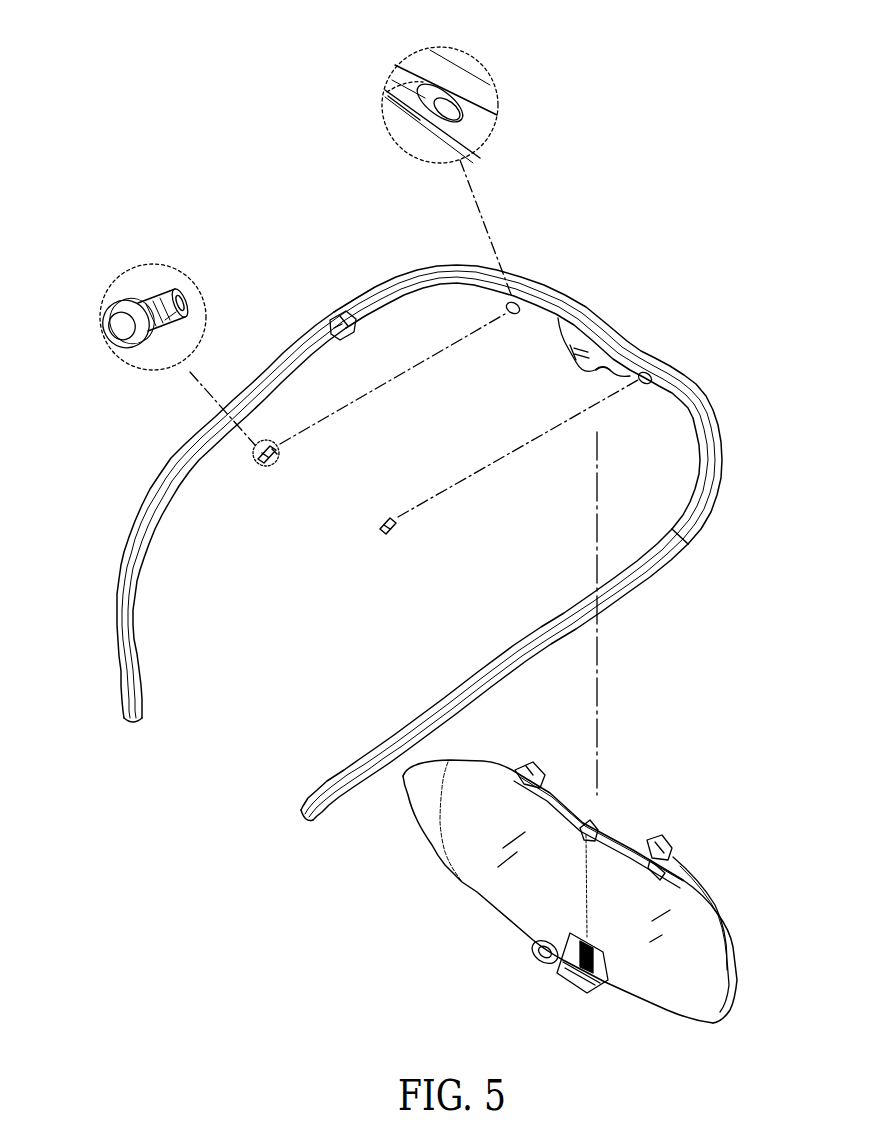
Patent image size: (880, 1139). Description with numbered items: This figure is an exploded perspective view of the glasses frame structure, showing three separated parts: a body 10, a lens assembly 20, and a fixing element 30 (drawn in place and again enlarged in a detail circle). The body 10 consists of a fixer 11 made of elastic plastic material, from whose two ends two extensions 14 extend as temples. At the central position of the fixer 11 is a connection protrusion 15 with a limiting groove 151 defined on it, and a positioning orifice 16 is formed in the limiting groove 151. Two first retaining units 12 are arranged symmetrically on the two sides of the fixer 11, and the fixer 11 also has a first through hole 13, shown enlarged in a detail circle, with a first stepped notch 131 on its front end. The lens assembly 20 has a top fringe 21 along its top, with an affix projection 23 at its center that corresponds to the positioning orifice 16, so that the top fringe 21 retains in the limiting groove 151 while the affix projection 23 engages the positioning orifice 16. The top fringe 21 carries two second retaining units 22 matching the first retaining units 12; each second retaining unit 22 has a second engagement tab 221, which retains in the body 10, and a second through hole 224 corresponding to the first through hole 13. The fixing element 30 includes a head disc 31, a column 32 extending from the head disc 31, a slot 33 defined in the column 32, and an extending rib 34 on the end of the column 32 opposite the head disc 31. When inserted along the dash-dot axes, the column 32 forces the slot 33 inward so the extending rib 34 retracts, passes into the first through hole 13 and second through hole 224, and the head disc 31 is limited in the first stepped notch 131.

The body 10 is at (426, 412).
The fixer 11 is at (694, 394).
The first retaining unit 12 is at (517, 300).
The first through hole 13 is at (486, 52).
The first stepped notch 131 is at (386, 98).
The extension 14 is at (162, 490).
The connection protrusion 15 is at (582, 368).
The limiting groove 151 is at (614, 384).
The positioning orifice 16 is at (570, 352).
The lens assembly 20 is at (595, 875).
The top fringe 21 is at (572, 800).
The second retaining unit 22 is at (548, 764).
The second engagement tab 221 is at (672, 852).
The second through hole 224 is at (665, 874).
The affix projection 23 is at (588, 826).
The fixing element 30 is at (341, 381).
The head disc 31 is at (104, 300).
The column 32 is at (142, 300).
The slot 33 is at (190, 330).
The extending rib 34 is at (178, 292).